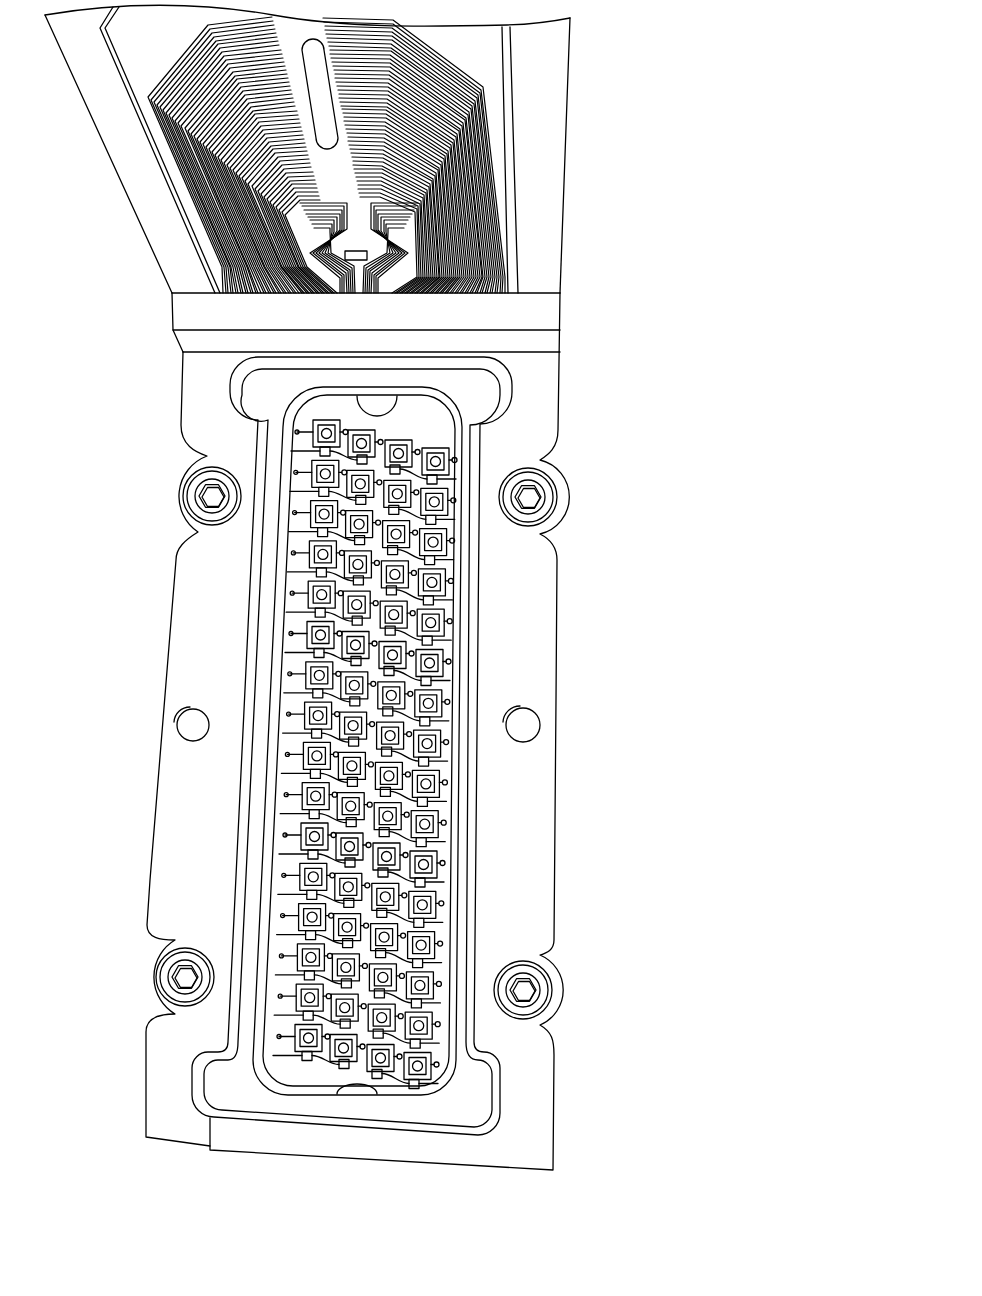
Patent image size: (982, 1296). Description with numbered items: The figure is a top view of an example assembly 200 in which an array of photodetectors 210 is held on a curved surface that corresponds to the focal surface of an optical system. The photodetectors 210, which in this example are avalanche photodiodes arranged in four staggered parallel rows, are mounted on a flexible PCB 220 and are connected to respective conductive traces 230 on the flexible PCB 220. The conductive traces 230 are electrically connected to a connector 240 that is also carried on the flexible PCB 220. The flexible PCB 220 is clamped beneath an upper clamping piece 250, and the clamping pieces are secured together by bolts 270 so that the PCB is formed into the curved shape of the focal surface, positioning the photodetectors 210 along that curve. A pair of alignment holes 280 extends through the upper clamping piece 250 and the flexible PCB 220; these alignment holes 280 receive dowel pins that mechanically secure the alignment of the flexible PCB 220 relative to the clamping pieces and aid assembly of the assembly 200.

The assembly 200 is at (800, 177).
The photodetectors 210 is at (395, 754).
The flexible PCB 220 is at (434, 413).
The conductive traces 230 is at (455, 856).
The connector 240 is at (388, 155).
The upper clamping piece 250 is at (556, 632).
The bolts 270 is at (562, 494).
The alignment holes 280 is at (547, 721).